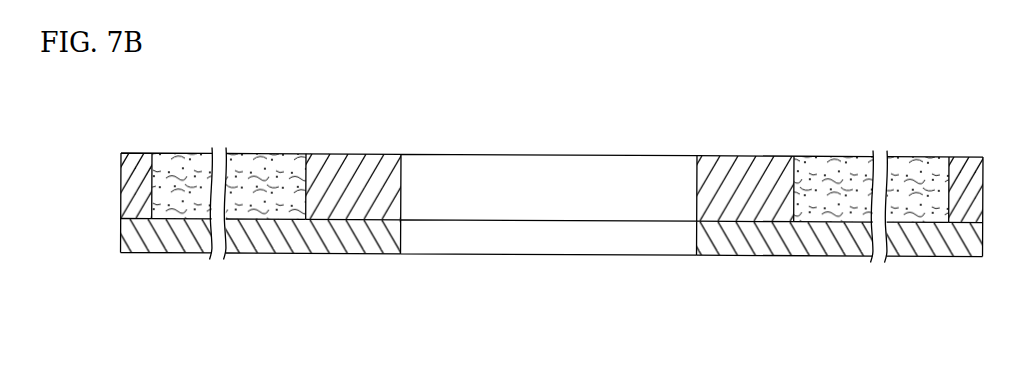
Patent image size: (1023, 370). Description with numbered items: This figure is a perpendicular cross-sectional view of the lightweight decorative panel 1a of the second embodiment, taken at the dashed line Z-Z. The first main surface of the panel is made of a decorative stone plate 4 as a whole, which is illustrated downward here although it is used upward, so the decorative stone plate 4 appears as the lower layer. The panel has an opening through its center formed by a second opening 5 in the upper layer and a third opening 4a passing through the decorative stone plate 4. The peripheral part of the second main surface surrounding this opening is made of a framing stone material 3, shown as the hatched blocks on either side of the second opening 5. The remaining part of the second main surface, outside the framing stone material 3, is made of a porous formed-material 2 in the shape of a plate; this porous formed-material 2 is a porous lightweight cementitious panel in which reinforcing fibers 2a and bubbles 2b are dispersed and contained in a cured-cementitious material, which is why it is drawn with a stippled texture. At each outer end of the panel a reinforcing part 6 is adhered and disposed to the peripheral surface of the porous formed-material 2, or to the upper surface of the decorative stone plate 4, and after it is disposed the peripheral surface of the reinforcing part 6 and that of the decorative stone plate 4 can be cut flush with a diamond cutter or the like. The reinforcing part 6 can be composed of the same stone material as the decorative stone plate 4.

The lightweight decorative panel 1a is at (762, 135).
The porous formed-material 2 is at (277, 163).
The reinforcing fiber 2a is at (158, 162).
The bubble 2b is at (197, 162).
The framing stone material 3 is at (335, 167).
The decorative stone plate 4 is at (315, 243).
The third opening 4a is at (403, 232).
The second opening 5 is at (403, 190).
The reinforcing part 6 is at (133, 162).